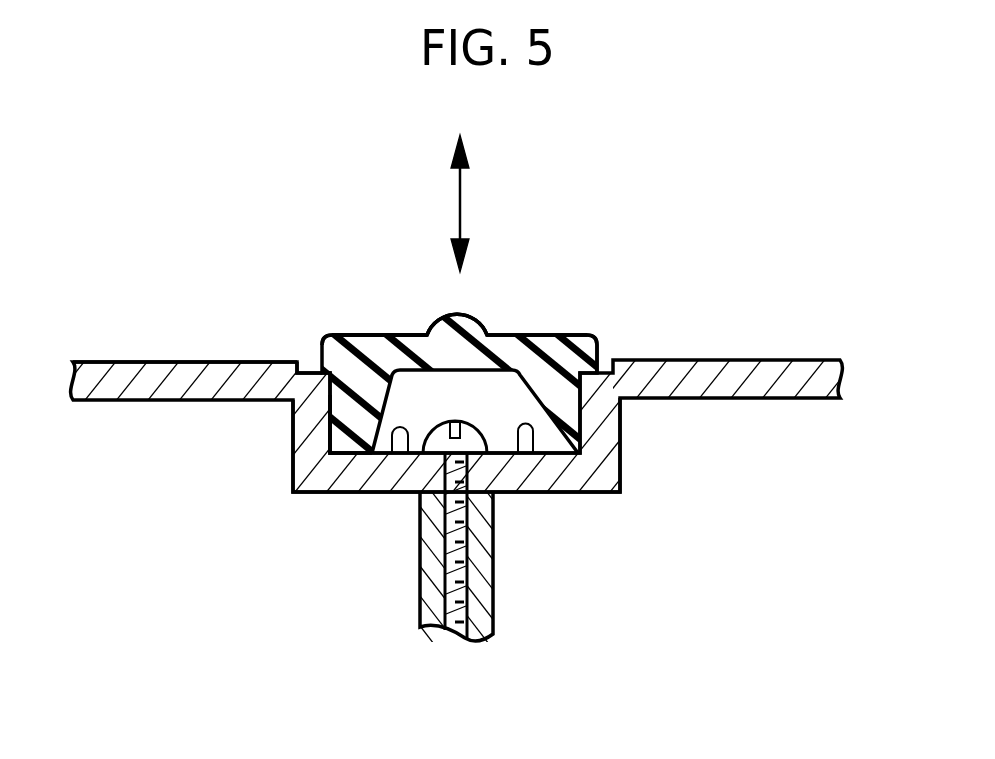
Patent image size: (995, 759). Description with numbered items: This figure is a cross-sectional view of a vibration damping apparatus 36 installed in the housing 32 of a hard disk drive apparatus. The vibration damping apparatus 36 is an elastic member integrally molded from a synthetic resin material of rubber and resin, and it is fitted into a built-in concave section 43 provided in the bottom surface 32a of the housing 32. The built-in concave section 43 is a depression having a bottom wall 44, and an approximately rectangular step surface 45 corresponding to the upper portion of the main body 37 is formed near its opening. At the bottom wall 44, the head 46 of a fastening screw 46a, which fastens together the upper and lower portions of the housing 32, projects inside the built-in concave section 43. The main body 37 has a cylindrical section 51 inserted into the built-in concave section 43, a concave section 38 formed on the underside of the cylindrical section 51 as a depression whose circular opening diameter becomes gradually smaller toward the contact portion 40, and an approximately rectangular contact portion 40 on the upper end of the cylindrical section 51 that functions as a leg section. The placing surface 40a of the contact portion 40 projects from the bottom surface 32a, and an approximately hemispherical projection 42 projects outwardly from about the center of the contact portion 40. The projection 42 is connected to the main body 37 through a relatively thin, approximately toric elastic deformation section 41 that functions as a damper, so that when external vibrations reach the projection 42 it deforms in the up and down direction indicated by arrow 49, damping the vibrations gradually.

The housing 32 is at (115, 402).
The bottom surface 32a is at (141, 361).
The vibration damping apparatus 36 is at (578, 328).
The main body 37 is at (570, 417).
The concave section 38 is at (534, 454).
The contact portion 40 is at (594, 338).
The placing surface 40a is at (353, 335).
The elastic deformation section 41 is at (378, 353).
The projection 42 is at (452, 316).
The built-in concave section 43 is at (348, 423).
The bottom wall 44 is at (392, 453).
The step surface 45 is at (308, 372).
The head 46 is at (474, 436).
The fastening screw 46a is at (465, 586).
The arrow 49 is at (461, 210).
The cylindrical section 51 is at (352, 433).